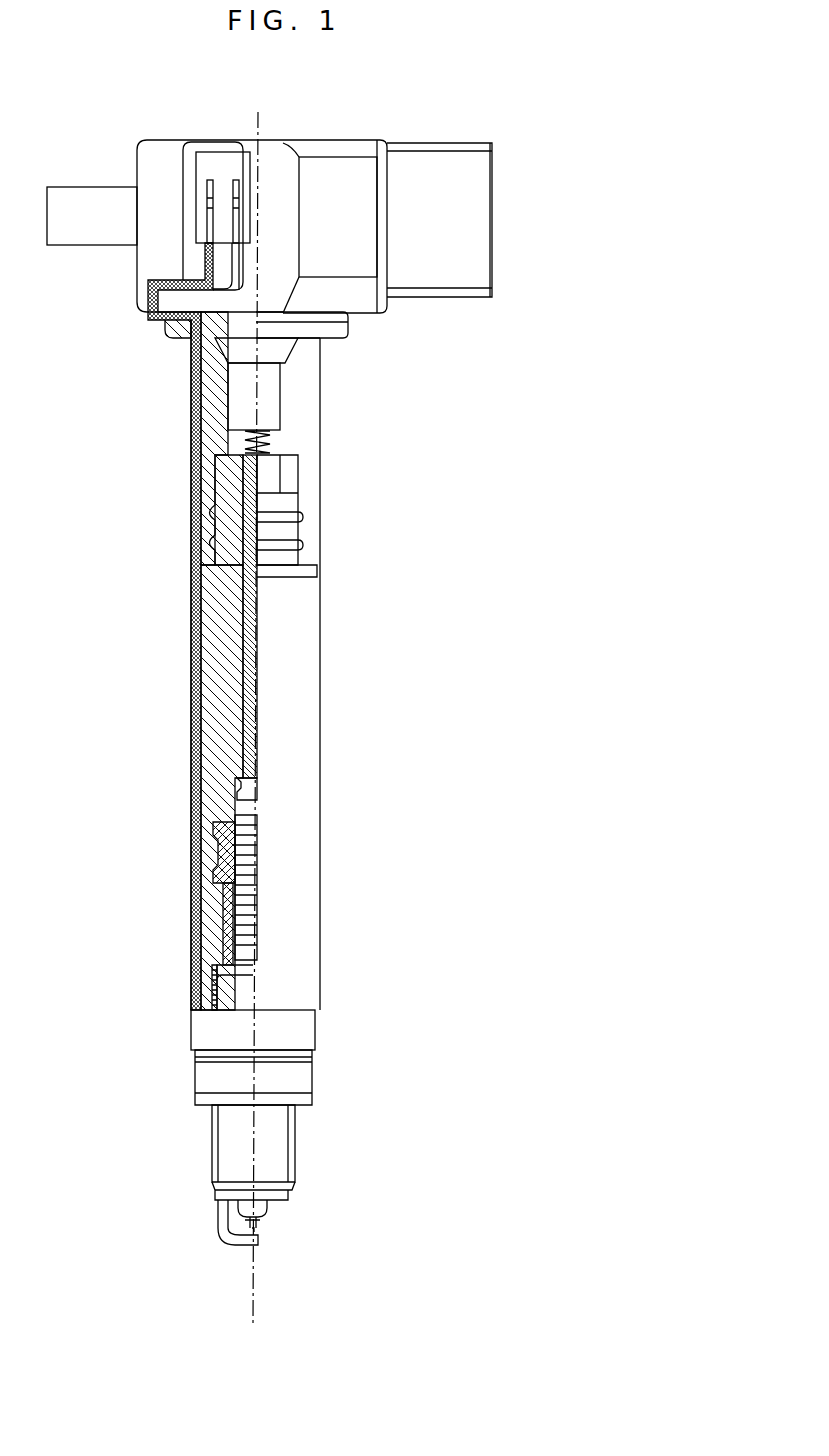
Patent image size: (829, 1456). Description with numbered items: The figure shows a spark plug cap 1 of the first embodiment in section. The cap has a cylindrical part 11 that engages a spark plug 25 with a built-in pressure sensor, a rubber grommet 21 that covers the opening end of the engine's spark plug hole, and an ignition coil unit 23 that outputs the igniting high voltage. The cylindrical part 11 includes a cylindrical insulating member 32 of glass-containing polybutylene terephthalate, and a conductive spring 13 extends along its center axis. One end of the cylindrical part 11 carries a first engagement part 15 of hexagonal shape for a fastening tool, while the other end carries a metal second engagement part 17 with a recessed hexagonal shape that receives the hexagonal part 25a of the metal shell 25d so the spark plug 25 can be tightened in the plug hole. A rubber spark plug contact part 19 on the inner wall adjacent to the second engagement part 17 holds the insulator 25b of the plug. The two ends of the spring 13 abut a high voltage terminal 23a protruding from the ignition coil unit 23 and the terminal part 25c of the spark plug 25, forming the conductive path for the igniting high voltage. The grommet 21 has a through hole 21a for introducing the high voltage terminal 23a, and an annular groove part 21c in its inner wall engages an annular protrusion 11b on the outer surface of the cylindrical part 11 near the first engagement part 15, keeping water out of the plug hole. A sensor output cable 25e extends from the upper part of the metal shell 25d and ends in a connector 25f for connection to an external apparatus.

The spark plug cap 1 is at (522, 147).
The cylindrical part 11 is at (393, 675).
The annular protrusion 11b is at (277, 517).
The spring 13 is at (265, 435).
The first engagement part 15 is at (292, 468).
The second engagement part 17 is at (207, 983).
The spark plug contact part 19 is at (213, 860).
The grommet 21 is at (201, 390).
The through hole 21a is at (295, 357).
The annular groove part 21c is at (303, 517).
The ignition coil unit 23 is at (155, 170).
The high voltage terminal 23a is at (273, 397).
The spark plug 25 is at (178, 1184).
The hexagonal part 25a is at (240, 990).
The insulator 25b is at (252, 863).
The terminal part 25c is at (250, 792).
The metal shell 25d is at (210, 1077).
The sensor output cable 25e is at (150, 327).
The connector 25f is at (223, 163).
The cylindrical insulating member 32 is at (217, 670).